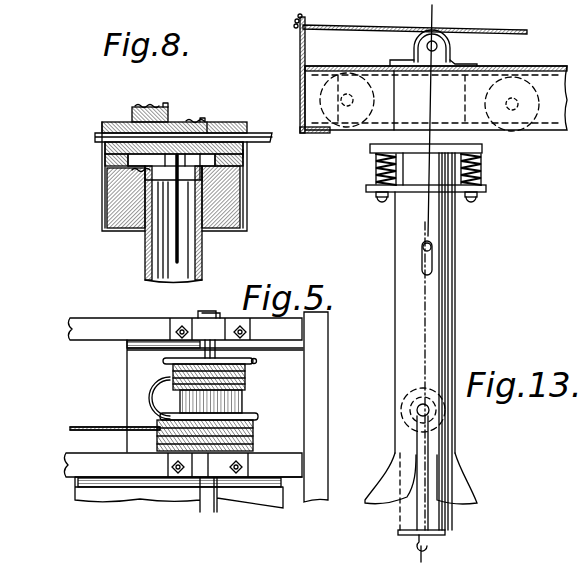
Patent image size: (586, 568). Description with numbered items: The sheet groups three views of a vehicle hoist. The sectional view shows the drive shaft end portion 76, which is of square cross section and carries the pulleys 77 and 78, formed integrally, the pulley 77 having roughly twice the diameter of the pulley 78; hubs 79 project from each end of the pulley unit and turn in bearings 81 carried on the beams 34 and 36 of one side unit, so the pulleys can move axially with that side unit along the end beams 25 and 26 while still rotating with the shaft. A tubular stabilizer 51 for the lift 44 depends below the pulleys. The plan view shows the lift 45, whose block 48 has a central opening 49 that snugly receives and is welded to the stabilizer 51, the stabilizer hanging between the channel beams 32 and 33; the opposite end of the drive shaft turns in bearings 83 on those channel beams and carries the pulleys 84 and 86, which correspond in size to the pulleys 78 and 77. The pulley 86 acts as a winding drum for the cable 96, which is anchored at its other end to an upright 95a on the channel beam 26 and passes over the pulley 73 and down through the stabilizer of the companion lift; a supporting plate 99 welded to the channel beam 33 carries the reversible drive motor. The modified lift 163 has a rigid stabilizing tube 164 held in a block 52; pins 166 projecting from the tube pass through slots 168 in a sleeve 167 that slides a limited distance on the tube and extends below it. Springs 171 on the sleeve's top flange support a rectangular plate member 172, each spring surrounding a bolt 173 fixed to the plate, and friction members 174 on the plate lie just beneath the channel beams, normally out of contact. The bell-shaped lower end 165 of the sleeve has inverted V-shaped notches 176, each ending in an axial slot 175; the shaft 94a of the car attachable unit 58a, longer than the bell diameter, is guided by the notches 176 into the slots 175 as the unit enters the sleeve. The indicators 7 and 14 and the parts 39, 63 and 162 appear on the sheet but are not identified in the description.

In FIG. 13, the section line 7 is at (364, 561).
In FIG. 13, the section line 14 is at (425, 17).
In FIG. 5, the end beam 25 is at (328, 394).
In FIG. 13, the channel beam 26 is at (300, 97).
In FIG. 5, the channel beam 32 is at (105, 330).
In FIG. 13, the channel beam 33 is at (492, 76).
In FIG. 8, the beam 34 is at (104, 198).
In FIG. 8, the beam 36 is at (248, 208).
In FIG. 5, the lower plate 39 is at (76, 456).
In FIG. 8, the lift 44 is at (201, 99).
In FIG. 5, the lift 45 is at (253, 400).
In FIG. 8, the block 48 is at (248, 188).
In FIG. 5, the block 48 is at (127, 357).
In FIG. 5, the opening 49 is at (150, 388).
In FIG. 8, the tubular stabilizing member 51 is at (202, 262).
In FIG. 5, the tubular stabilizing member 51 is at (155, 405).
In FIG. 13, the block member 52 is at (458, 66).
In FIG. 13, the car attachable unit 58a is at (454, 528).
In FIG. 13, the hook 63 is at (417, 545).
In FIG. 13, the pulley 73 is at (448, 31).
In FIG. 8, the end portion 76 is at (272, 138).
In FIG. 8, the pulley 77 is at (133, 108).
In FIG. 8, the pulley 78 is at (208, 122).
In FIG. 8, the hub 79 is at (238, 125).
In FIG. 8, the bearing 81 is at (248, 157).
In FIG. 5, the bearing 83 is at (210, 330).
In FIG. 5, the pulley 84 is at (256, 360).
In FIG. 5, the pulley 86 is at (255, 430).
In FIG. 13, the shaft 94a is at (430, 410).
In FIG. 13, the upright 95a is at (306, 52).
In FIG. 5, the cable 96 is at (118, 567).
In FIG. 5, the supporting plate 99 is at (118, 492).
In FIG. 13, the rod 162 is at (585, 158).
In FIG. 13, the lift 163 is at (470, 334).
In FIG. 13, the stabilizing tube 164 is at (447, 213).
In FIG. 13, the lower end 165 is at (408, 453).
In FIG. 13, the pin 166 is at (433, 246).
In FIG. 13, the sleeve 167 is at (455, 283).
In FIG. 13, the slot 168 is at (420, 258).
In FIG. 13, the spring 171 is at (485, 184).
In FIG. 13, the plate member 172 is at (484, 158).
In FIG. 13, the bolt 173 is at (376, 170).
In FIG. 13, the friction member 174 is at (370, 147).
In FIG. 13, the slot 175 is at (427, 446).
In FIG. 13, the notch 176 is at (405, 500).